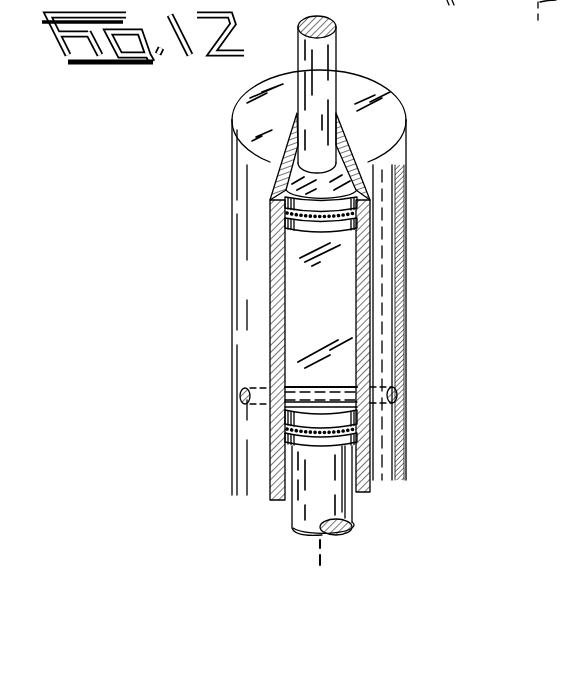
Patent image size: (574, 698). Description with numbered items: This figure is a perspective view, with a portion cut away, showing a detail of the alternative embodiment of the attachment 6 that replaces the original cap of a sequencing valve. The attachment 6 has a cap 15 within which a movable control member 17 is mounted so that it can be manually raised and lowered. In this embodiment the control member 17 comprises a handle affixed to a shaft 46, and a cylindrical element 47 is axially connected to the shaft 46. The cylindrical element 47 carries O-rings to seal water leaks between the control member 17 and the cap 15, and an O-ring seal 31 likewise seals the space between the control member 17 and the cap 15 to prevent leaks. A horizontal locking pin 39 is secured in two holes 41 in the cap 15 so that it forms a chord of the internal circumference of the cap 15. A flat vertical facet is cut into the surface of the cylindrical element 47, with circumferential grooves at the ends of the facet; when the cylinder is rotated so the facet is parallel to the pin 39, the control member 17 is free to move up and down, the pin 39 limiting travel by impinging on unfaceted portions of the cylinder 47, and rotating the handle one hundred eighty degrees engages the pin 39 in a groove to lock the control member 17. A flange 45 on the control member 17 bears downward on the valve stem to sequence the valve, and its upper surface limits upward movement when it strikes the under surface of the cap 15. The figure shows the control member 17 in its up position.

The attachment 6 is at (353, 285).
The cap 15 is at (408, 235).
The control member 17 is at (348, 505).
The O-ring seal 31 is at (290, 428).
The locking pin 39 is at (307, 387).
The holes 41 is at (240, 397).
The flange 45 is at (317, 436).
The shaft 46 is at (335, 58).
The cylindrical element 47 is at (341, 175).